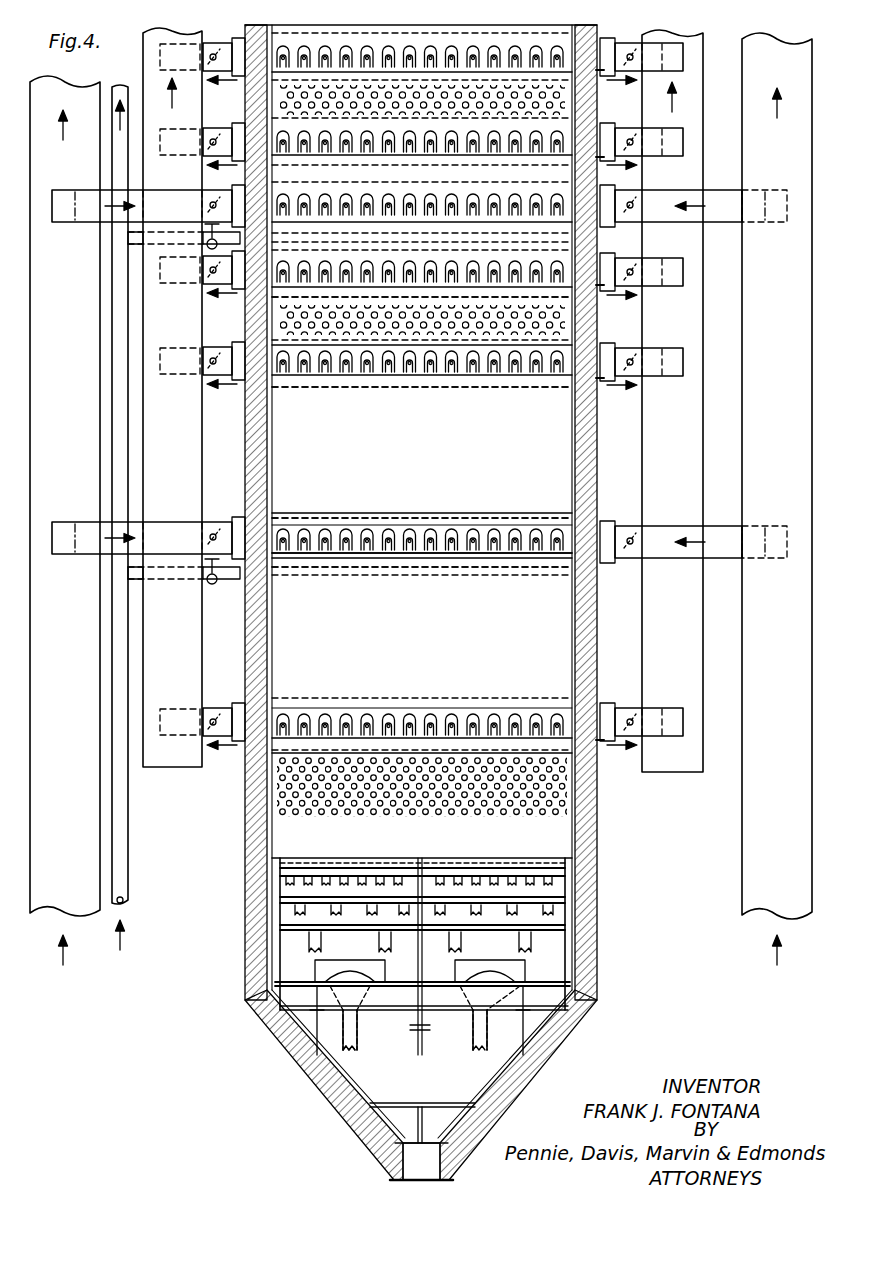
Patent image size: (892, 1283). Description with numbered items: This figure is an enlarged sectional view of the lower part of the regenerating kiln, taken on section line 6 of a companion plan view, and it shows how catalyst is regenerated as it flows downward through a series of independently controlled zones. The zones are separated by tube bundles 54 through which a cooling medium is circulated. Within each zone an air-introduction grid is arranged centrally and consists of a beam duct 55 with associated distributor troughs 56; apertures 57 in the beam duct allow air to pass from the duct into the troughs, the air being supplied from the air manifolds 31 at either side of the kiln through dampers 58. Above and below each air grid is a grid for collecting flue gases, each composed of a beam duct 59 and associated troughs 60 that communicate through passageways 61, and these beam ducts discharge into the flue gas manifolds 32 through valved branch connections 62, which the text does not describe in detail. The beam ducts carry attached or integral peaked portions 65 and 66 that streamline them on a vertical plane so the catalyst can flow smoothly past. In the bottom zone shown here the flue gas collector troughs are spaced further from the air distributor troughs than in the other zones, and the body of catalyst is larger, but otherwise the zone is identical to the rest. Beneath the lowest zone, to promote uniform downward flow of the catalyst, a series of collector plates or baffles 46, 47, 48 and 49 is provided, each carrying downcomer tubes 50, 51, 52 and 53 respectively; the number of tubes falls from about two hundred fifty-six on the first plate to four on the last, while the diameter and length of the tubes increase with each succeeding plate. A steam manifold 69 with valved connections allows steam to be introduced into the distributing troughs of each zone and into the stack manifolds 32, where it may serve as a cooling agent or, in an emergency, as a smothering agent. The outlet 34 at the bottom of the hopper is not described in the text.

The section line 6— 6 is at (422, 12).
The air manifold 31 is at (745, 835).
The flue gas manifold 32 is at (704, 56).
The bottom outlet 34 is at (445, 1172).
The collector plate 46 is at (572, 883).
The collector plate 47 is at (572, 905).
The collector plate 48 is at (572, 932).
The collector plate 49 is at (572, 986).
The distributing tubes 50 is at (275, 881).
The distributing tubes 51 is at (275, 913).
The distributing tubes 52 is at (372, 944).
The distributing tubes 53 is at (360, 1032).
The tube bundles 54 is at (572, 100).
The beam duct 55 is at (275, 207).
The distributor troughs 56 is at (322, 528).
The apertures 57 is at (368, 555).
The damper 58 is at (212, 205).
The beam duct 59 is at (250, 44).
The troughs 60 is at (325, 52).
The passageways 61 is at (390, 52).
The branch pipes with valves 62 is at (213, 55).
The peaked portion 65 is at (247, 318).
The peaked portion 66 is at (340, 387).
The steam manifold 69 is at (124, 830).